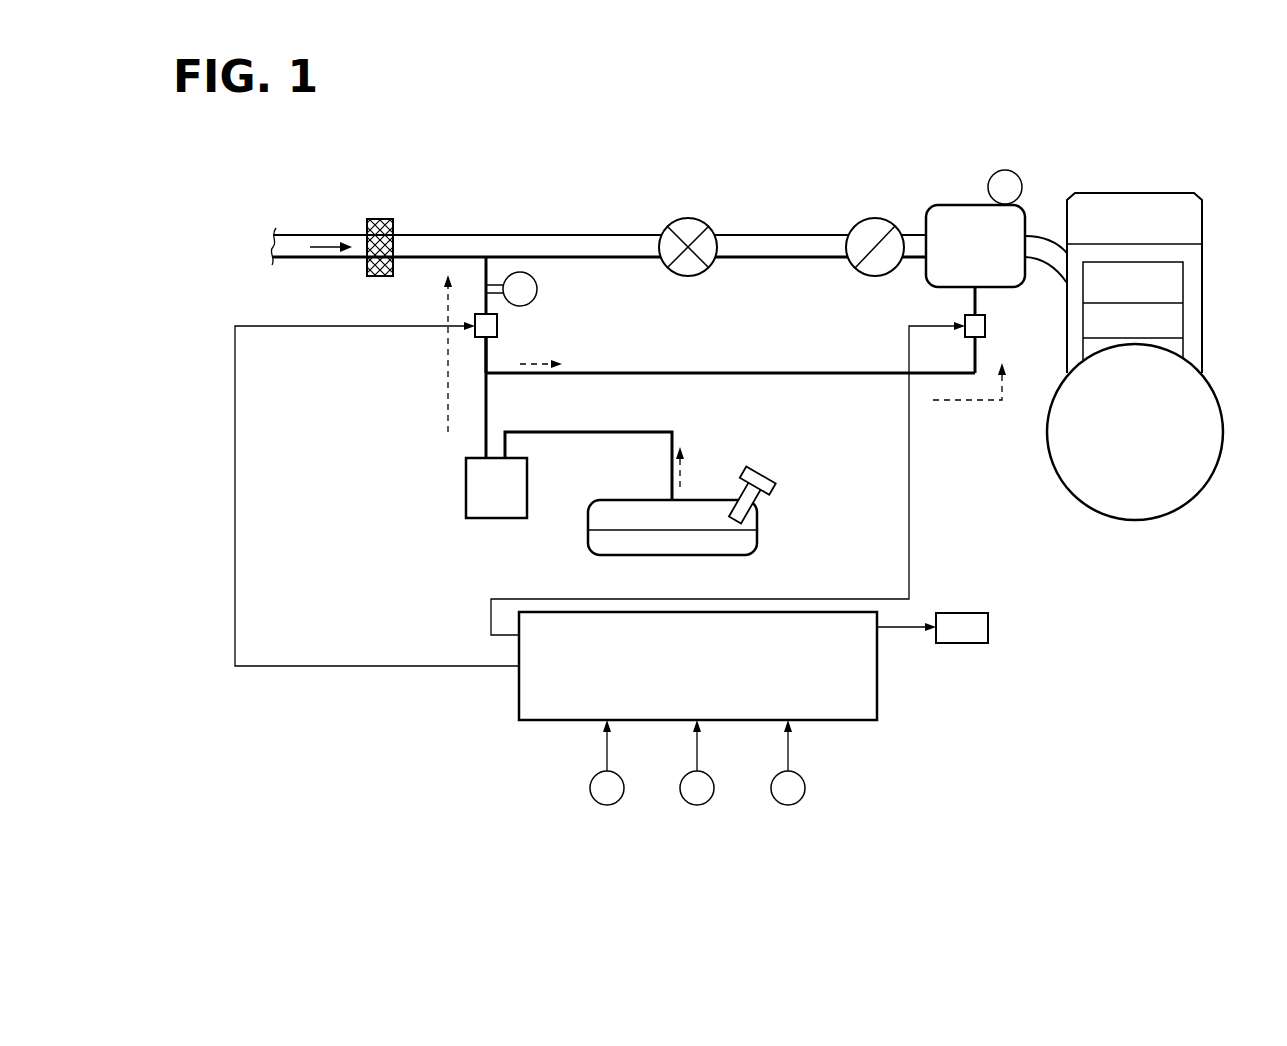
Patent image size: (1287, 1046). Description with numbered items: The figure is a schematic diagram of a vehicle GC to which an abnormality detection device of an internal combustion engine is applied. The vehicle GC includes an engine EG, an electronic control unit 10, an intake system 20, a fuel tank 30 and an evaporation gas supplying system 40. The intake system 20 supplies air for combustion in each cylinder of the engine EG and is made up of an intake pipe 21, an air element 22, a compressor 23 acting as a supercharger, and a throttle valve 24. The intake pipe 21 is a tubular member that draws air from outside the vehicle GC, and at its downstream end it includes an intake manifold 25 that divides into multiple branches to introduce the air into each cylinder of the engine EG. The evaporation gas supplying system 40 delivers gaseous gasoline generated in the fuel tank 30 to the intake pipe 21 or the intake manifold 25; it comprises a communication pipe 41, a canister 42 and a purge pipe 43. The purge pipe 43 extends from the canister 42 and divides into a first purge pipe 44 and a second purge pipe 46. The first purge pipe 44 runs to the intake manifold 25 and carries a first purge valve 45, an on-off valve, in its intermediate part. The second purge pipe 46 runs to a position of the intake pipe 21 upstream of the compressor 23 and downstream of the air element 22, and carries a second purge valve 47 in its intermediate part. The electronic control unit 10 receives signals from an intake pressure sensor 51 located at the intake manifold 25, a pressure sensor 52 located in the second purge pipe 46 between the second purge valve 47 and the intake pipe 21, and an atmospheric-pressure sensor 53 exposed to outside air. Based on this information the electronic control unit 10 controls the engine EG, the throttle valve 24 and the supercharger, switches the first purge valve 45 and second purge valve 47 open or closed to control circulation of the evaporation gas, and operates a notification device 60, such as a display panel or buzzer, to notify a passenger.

The electronic control unit (ECU) 10 is at (877, 655).
The intake system 20 is at (436, 201).
The intake pipe 21 is at (322, 233).
The air element 22 is at (382, 219).
The compressor 23 is at (688, 217).
The throttle valve 24 is at (875, 217).
The intake manifold 25 is at (965, 204).
The fuel tank 30 is at (757, 535).
The evaporation gas supplying system 40 is at (428, 504).
The communication pipe 41 is at (590, 432).
The canister 42 is at (490, 518).
The purge pipe 43 is at (485, 418).
The first purge pipe 44 is at (655, 373).
The first purge valve 45 is at (985, 326).
The second purge pipe 46 is at (485, 358).
The second purge valve 47 is at (497, 326).
The intake pressure sensor 51 is at (1013, 172).
The pressure sensor 52 is at (538, 287).
The atmospheric-pressure sensor 53 is at (788, 805).
The notification device 60 is at (950, 613).
The vehicle GC is at (1132, 151).
The engine EG is at (1135, 520).